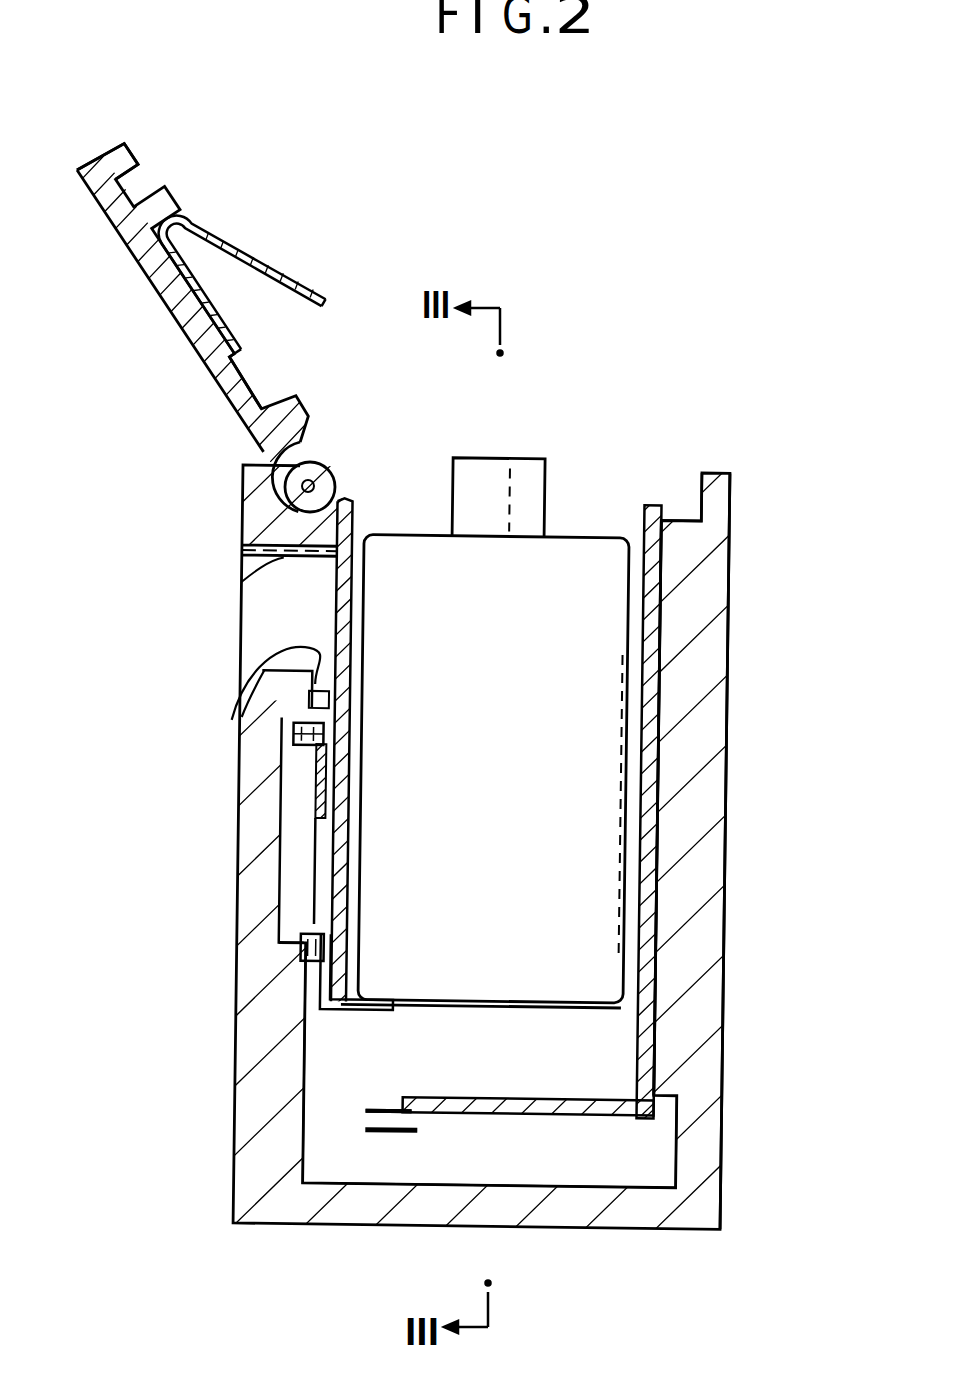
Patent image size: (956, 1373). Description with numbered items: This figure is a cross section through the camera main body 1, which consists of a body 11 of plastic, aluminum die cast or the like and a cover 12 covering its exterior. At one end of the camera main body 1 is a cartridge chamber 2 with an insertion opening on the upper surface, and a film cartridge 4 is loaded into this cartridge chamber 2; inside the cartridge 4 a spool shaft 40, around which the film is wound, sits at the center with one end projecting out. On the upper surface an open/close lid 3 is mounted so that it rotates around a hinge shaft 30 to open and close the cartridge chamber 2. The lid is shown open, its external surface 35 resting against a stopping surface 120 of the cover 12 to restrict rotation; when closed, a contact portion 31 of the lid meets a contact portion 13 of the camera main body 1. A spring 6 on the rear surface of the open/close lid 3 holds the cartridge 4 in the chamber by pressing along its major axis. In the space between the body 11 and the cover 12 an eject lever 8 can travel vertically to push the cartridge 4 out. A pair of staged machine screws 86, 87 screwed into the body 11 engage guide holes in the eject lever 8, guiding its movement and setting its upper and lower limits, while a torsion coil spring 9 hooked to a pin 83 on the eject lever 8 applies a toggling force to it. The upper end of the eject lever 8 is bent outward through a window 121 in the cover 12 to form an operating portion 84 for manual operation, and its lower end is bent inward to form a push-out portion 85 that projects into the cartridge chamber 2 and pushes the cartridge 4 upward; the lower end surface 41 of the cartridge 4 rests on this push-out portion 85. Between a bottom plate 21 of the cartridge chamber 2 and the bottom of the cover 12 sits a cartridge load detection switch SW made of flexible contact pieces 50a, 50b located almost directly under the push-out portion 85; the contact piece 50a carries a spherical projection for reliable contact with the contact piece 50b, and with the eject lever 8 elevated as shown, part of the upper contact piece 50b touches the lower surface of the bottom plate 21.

The camera main body 1 is at (735, 972).
The cartridge chamber 2 is at (633, 982).
The open/close lid 3 is at (178, 337).
The film cartridge 4 is at (600, 798).
The spring 6 is at (303, 280).
The eject lever 8 is at (322, 853).
The torsion coil spring 9 is at (296, 750).
The body 11 is at (650, 697).
The cover 12 is at (730, 600).
The contact portion 13 is at (673, 517).
The bottom plate 21 is at (547, 1097).
The hinge shaft 30 is at (318, 485).
The contact portion 31 is at (127, 147).
The external surface 35 is at (217, 387).
The spool shaft 40 is at (526, 455).
The lower end surface 41 is at (523, 1005).
The contact piece 50a is at (378, 1131).
The contact piece 50b is at (390, 1105).
The pin 83 is at (322, 800).
The operating portion 84 is at (280, 556).
The push-out portion 85 is at (347, 1010).
The staged machine screw 86 is at (308, 958).
The staged machine screw 87 is at (243, 683).
The stopping surface 120 is at (257, 453).
The window 121 is at (267, 622).
The cartridge load detection switch SW is at (420, 1137).